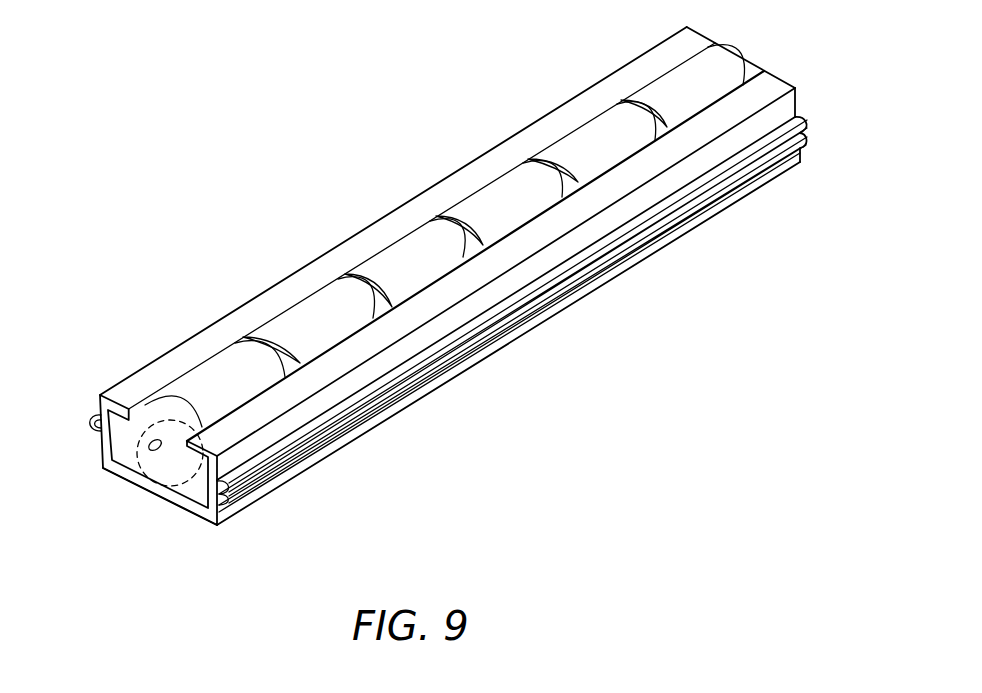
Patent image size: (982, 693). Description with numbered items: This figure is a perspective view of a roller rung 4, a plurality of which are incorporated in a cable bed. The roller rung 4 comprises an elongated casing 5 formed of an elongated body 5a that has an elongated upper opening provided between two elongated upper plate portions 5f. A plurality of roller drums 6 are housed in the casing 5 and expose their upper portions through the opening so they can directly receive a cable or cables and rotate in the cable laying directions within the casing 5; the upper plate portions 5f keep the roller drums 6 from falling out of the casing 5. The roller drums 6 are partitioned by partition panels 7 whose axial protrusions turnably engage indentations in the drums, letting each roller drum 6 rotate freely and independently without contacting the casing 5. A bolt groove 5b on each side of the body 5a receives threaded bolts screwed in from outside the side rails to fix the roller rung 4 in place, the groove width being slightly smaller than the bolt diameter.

The roller rung 4 is at (775, 176).
The casing 5 is at (683, 228).
The body 5a is at (125, 480).
The bolt groove 5b is at (90, 421).
The upper plate portions 5f is at (205, 348).
The roller drums 6 is at (578, 138).
The partition panels 7 is at (192, 490).